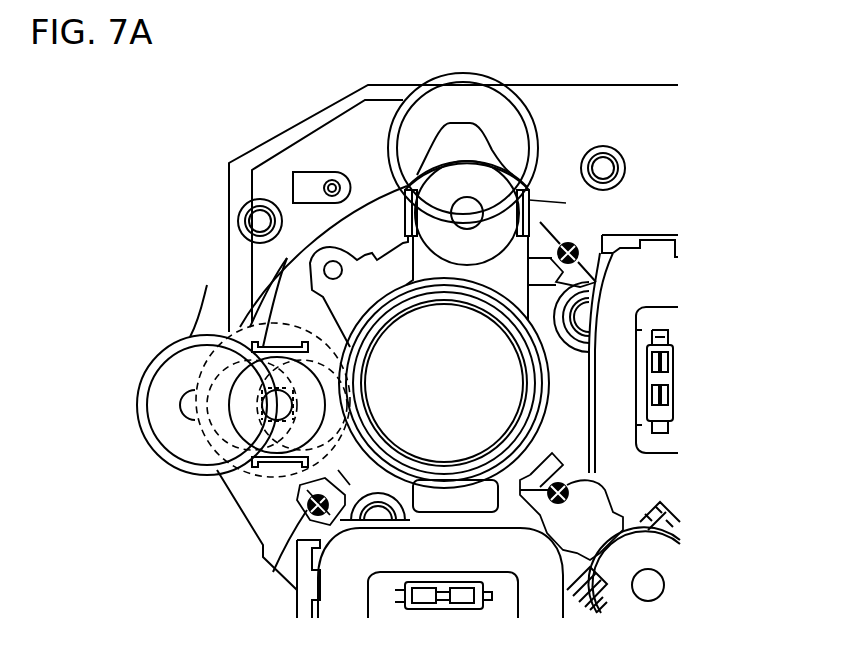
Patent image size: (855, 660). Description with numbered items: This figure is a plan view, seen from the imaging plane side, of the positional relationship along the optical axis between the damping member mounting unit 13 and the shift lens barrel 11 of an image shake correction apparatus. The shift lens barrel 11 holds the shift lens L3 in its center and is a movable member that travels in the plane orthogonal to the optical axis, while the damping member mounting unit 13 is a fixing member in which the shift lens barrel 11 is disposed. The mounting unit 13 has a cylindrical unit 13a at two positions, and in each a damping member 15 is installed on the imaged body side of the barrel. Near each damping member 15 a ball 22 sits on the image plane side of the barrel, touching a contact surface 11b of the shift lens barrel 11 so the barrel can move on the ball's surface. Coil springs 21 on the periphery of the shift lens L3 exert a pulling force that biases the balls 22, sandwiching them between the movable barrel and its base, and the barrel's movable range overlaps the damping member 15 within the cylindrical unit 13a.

The shift lens barrel 11 is at (470, 130).
The contact surface 11b is at (568, 203).
The damping member mounting unit 13 is at (588, 125).
The cylindrical unit 13a is at (497, 80).
The damping member 15 is at (441, 100).
The coil spring 21 is at (575, 248).
The ball 22 is at (465, 212).
The shift lens L3 is at (492, 395).